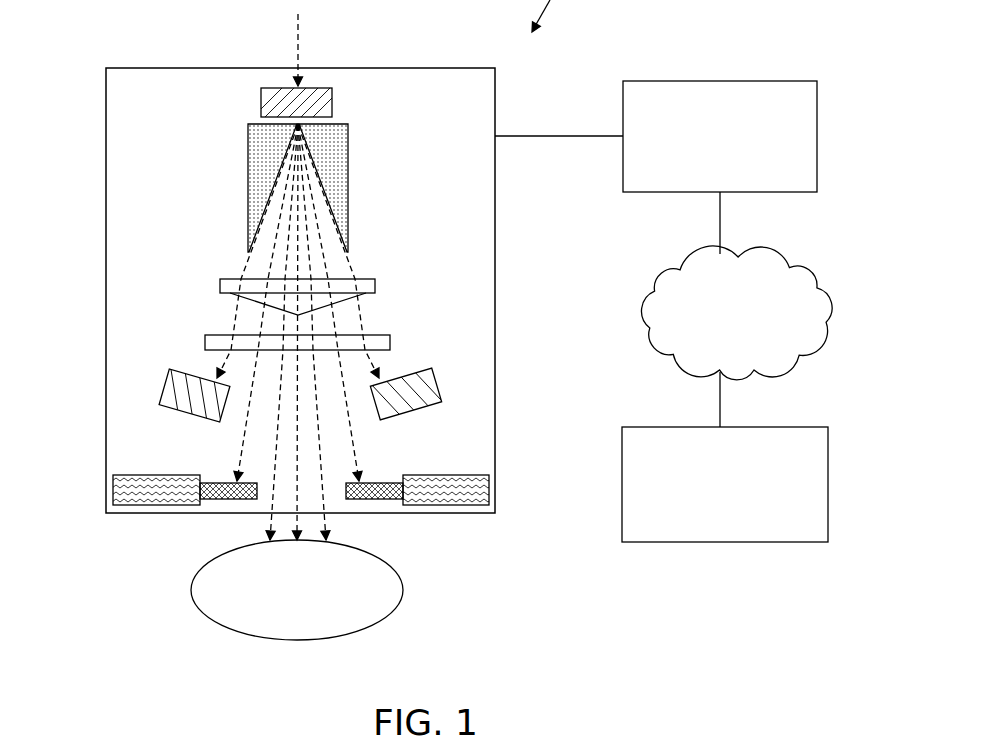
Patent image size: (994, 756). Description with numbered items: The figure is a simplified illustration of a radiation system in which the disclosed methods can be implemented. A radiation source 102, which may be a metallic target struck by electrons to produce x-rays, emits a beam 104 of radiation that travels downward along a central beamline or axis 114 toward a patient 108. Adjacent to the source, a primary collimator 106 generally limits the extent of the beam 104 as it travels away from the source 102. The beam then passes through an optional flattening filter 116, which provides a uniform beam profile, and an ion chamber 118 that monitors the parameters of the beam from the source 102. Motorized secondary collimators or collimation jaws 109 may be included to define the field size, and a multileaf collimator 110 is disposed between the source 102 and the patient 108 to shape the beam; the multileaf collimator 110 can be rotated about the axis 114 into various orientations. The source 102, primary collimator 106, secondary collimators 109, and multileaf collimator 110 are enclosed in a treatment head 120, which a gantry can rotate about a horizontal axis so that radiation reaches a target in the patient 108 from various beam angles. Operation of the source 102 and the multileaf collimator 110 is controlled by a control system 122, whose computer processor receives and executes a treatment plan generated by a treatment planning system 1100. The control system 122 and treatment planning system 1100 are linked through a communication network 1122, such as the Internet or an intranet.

The radiation source 102 is at (303, 88).
The beam 104 is at (290, 124).
The primary collimator 106 is at (348, 173).
The patient 108 is at (405, 590).
The secondary collimators 109 is at (423, 375).
The multileaf collimator 110 is at (383, 483).
The central beamline 114 is at (297, 493).
The flattening filter 116 is at (220, 281).
The ion chamber 118 is at (205, 338).
The treatment head 120 is at (106, 262).
The control system 122 is at (817, 135).
The treatment planning system 1100 is at (724, 542).
The communication network 1122 is at (832, 283).